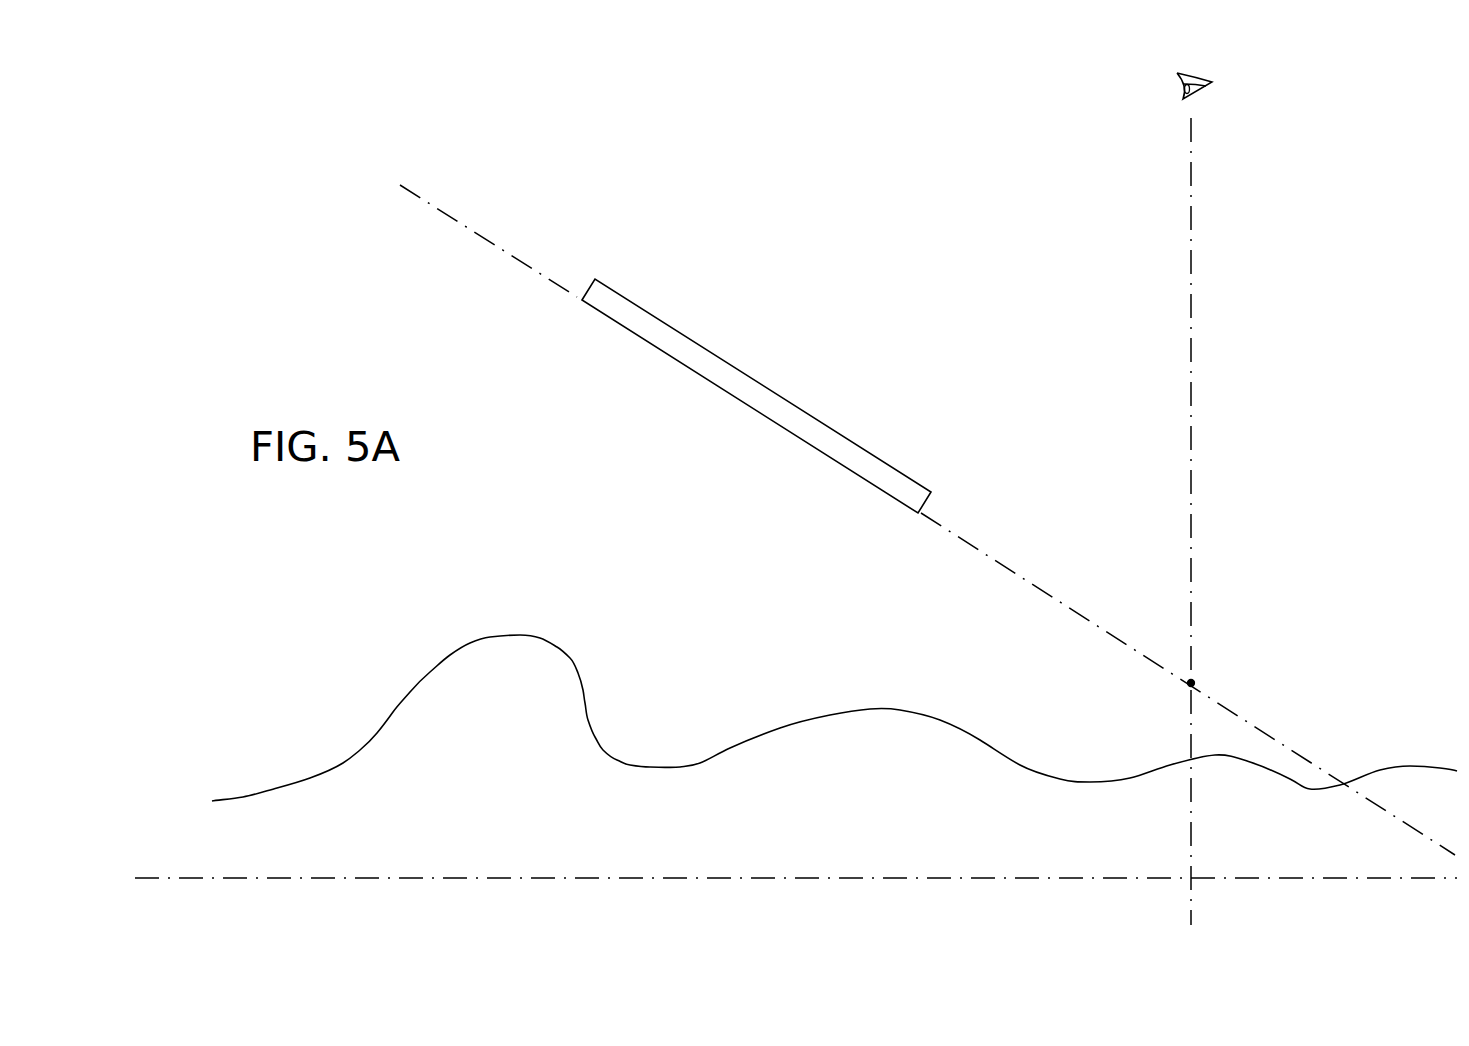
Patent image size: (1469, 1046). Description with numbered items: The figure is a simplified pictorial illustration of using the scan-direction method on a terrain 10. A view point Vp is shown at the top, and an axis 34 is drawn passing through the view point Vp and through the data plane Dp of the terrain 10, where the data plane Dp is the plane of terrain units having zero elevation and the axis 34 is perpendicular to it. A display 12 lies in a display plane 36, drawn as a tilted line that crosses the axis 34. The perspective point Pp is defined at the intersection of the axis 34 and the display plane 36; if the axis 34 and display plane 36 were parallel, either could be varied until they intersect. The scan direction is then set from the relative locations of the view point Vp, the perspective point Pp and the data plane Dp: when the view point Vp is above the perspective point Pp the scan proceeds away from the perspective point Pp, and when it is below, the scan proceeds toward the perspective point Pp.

The terrain 10 is at (268, 712).
The display 12 is at (638, 270).
The axis 34 is at (1191, 490).
The display plane 36 is at (507, 252).
The view point Vp is at (1205, 88).
The perspective point Pp is at (1193, 681).
The data plane Dp is at (240, 878).